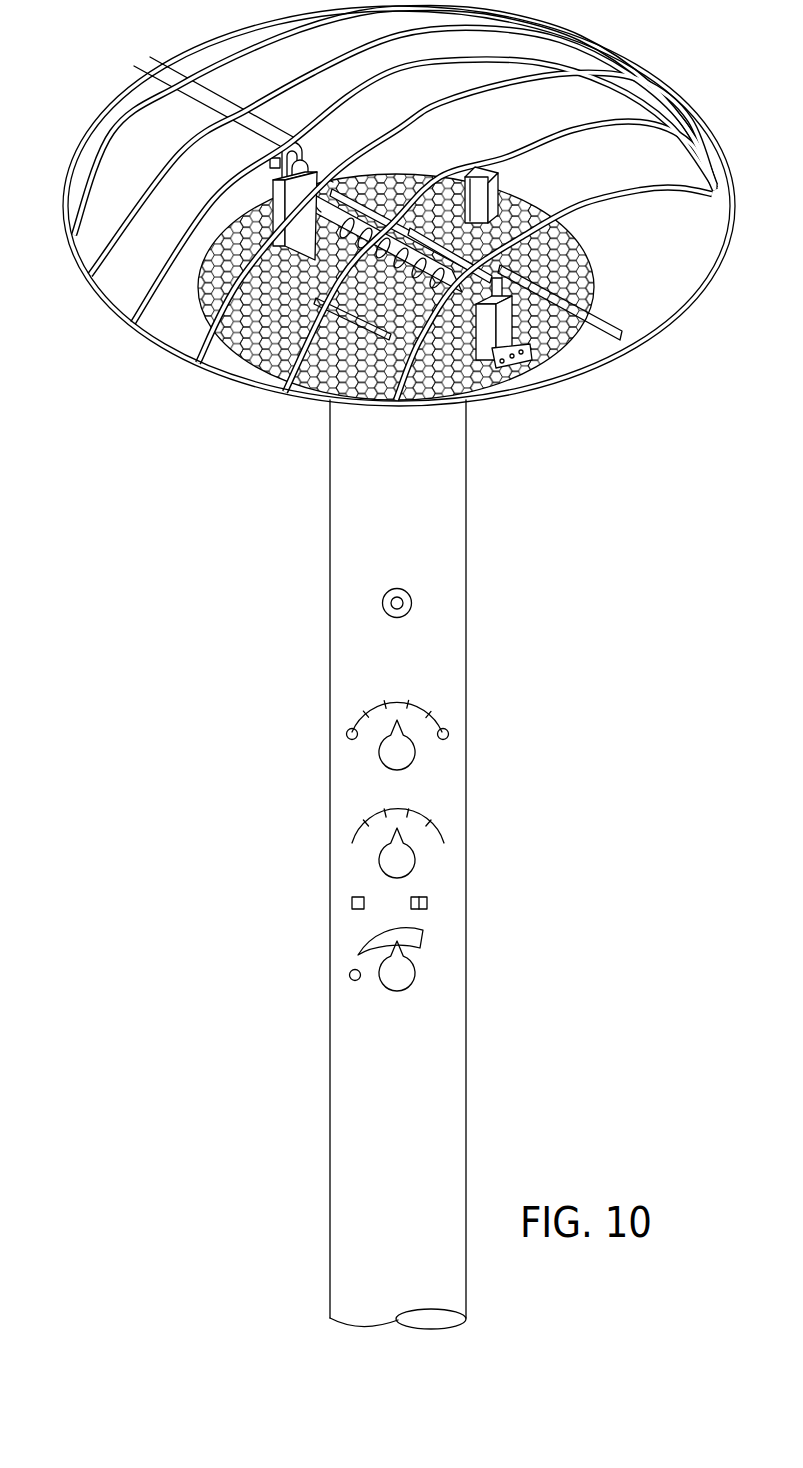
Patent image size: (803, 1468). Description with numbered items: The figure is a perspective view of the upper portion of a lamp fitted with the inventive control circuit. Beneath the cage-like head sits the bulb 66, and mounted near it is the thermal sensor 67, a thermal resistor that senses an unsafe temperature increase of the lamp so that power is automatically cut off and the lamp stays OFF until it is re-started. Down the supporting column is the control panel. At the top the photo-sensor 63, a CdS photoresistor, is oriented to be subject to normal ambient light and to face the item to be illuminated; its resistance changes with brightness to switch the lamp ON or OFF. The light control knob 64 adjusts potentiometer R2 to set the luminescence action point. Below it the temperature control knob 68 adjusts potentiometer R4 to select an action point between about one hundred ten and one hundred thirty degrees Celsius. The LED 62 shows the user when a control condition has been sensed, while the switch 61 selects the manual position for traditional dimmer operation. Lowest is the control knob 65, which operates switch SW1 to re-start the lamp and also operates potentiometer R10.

The switch 61 is at (428, 902).
The LED 62 is at (350, 902).
The photo-sensor 63 is at (412, 602).
The light control knob 64 is at (415, 757).
The control knob 65 is at (415, 972).
The bulb 66 is at (362, 330).
The thermal sensor 67 is at (500, 182).
The temperature control knob 68 is at (415, 862).